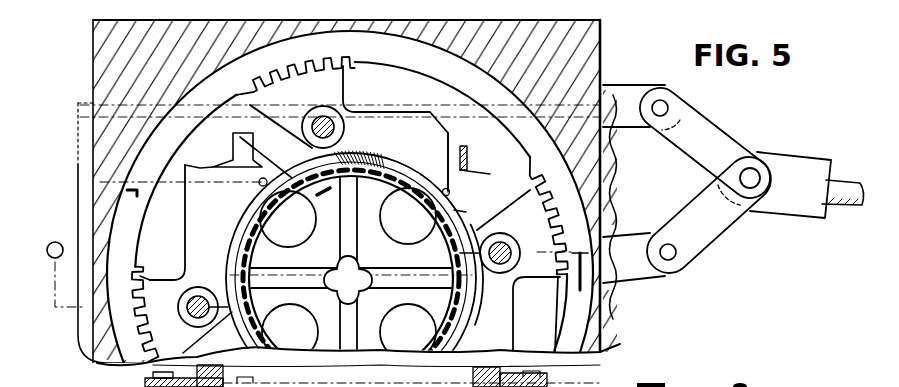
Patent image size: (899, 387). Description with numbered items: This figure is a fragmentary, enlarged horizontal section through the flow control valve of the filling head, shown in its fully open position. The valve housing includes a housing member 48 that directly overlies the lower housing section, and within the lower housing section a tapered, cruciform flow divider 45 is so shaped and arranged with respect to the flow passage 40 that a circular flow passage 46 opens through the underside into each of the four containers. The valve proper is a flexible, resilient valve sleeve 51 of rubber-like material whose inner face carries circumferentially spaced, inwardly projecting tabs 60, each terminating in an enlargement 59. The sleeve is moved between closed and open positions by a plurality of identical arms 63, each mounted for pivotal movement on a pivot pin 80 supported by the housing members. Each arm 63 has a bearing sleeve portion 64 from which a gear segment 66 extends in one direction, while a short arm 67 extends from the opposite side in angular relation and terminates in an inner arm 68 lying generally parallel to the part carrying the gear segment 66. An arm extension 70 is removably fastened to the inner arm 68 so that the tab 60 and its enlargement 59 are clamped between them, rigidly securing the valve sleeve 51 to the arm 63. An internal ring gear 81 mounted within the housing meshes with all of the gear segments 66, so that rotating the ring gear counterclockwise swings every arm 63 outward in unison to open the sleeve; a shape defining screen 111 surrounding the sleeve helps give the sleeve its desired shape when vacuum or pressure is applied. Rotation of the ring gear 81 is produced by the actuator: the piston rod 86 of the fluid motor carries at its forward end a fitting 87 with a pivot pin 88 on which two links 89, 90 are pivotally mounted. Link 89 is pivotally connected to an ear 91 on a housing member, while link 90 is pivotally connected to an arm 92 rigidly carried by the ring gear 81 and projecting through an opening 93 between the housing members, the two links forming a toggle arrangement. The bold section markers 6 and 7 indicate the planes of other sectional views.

The housing member 48 is at (622, 44).
The ear 91 is at (630, 86).
The link 89 is at (664, 138).
The pivot pin 88 is at (752, 168).
The fitting 87 is at (802, 160).
The piston rod 86 is at (840, 182).
The link 90 is at (725, 229).
The opening 93 is at (626, 234).
The arm 92 is at (637, 276).
The arm 63 is at (398, 116).
The shape defining screen 111 is at (392, 157).
The internal ring gear 81 is at (525, 147).
The enlargement 59 is at (456, 196).
The tab 60 is at (452, 213).
The arm extension 70 is at (262, 166).
The section line 7- 7 is at (230, 206).
The flow divider 45 is at (362, 250).
The circular flow passage 46 is at (395, 327).
The valve sleeve 51 is at (258, 263).
The inner arm 68 is at (204, 208).
The short arm 67 is at (190, 255).
The pivot pin 80 is at (200, 292).
The bearing sleeve portion 64 is at (185, 306).
The gear segment 66 is at (150, 340).
The section line 6- 6 is at (317, 279).
The flow passage 40 is at (399, 376).